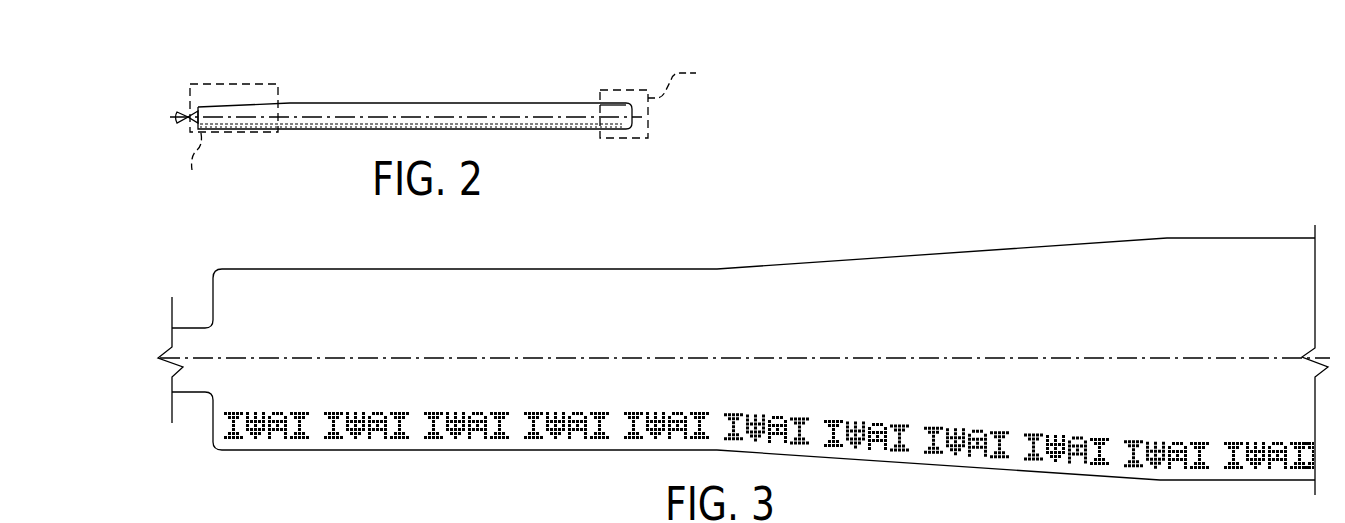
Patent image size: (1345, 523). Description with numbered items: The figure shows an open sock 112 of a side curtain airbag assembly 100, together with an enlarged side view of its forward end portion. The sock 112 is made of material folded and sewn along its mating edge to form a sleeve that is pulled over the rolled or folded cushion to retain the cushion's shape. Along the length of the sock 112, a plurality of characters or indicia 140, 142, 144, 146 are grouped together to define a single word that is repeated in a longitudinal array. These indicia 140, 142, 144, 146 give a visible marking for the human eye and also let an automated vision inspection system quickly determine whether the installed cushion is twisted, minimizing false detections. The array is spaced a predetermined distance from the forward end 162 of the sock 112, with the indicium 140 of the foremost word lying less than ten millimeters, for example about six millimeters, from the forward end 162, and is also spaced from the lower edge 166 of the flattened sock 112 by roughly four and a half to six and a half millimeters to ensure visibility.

In FIG. 2, the side curtain airbag assembly 100 is at (363, 94).
In FIG. 2, the sock 112 is at (447, 112).
In FIG. 3, the sock 112 is at (790, 287).
In FIG. 3, the indicium 140 is at (332, 446).
In FIG. 3, the indicium 142 is at (358, 446).
In FIG. 3, the indicium 144 is at (378, 446).
In FIG. 3, the indicium 146 is at (403, 446).
In FIG. 3, the forward end 162 is at (212, 432).
In FIG. 3, the lower edge 166 is at (883, 462).